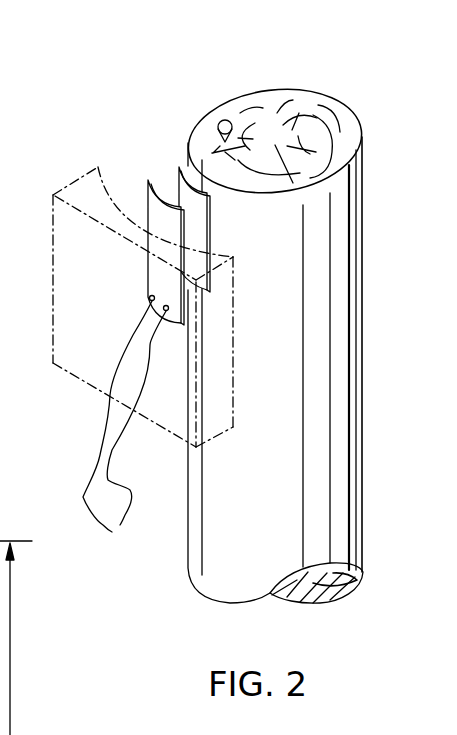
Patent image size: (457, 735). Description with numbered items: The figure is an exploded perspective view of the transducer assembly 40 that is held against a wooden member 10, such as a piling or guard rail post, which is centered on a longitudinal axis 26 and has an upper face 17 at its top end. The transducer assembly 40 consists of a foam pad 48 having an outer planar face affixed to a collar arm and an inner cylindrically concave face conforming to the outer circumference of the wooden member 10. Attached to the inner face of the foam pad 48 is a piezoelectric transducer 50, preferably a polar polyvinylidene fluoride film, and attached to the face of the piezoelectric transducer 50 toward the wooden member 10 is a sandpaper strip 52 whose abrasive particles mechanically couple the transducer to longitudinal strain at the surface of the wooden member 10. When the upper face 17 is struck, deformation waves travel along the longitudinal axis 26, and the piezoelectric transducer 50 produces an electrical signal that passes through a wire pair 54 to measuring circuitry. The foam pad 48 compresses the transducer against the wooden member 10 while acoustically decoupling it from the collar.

The wooden member 10 is at (285, 475).
The upper face 17 is at (312, 107).
The longitudinal axis 26 is at (226, 120).
The transducer assembly 40 is at (66, 387).
The foam pad 48 is at (120, 307).
The piezoelectric transducer 50 is at (147, 197).
The sandpaper strip 52 is at (182, 192).
The wire pair 54 is at (124, 424).